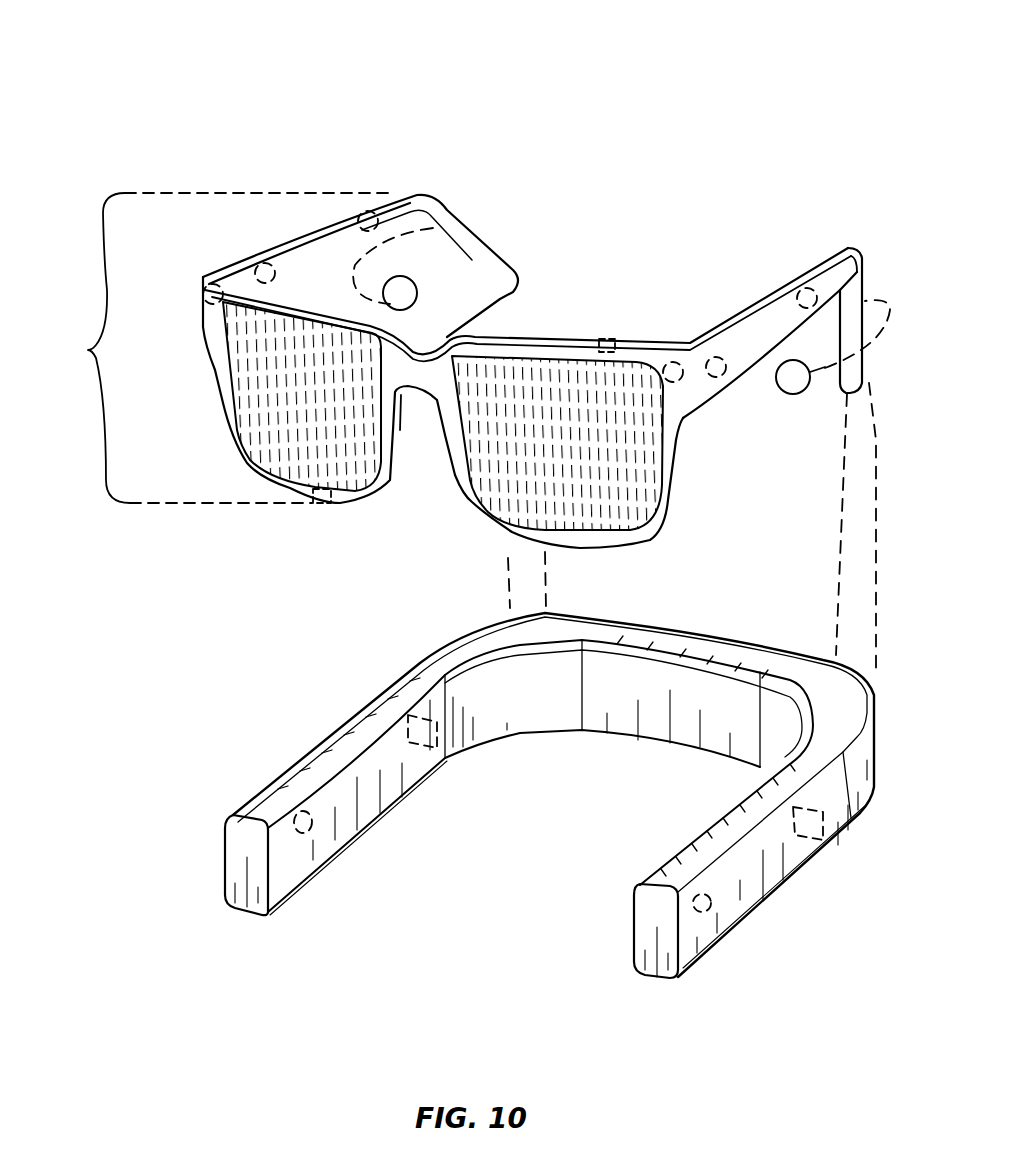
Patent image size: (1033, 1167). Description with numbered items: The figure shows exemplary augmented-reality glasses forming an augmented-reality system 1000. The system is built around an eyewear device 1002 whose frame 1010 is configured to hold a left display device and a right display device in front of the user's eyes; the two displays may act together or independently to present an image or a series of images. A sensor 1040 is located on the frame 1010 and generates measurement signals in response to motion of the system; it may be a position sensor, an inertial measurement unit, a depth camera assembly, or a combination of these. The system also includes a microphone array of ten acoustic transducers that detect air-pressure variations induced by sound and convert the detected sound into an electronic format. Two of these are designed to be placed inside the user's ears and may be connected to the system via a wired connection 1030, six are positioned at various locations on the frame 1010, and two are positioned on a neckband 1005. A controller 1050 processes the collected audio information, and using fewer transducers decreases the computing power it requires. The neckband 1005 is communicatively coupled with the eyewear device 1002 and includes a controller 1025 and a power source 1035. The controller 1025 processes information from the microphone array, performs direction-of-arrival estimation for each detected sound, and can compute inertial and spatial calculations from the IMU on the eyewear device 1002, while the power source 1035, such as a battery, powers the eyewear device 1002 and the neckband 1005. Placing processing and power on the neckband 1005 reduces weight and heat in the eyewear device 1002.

The augmented-reality system 1000 is at (105, 110).
The eyewear device 1002 is at (461, 361).
The frame 1010 is at (418, 204).
The controller 1050 is at (603, 345).
The sensor 1040 is at (313, 500).
The wired connection 1030 is at (862, 557).
The neckband 1005 is at (677, 985).
The power source 1035 is at (425, 748).
The controller 1025 is at (805, 828).